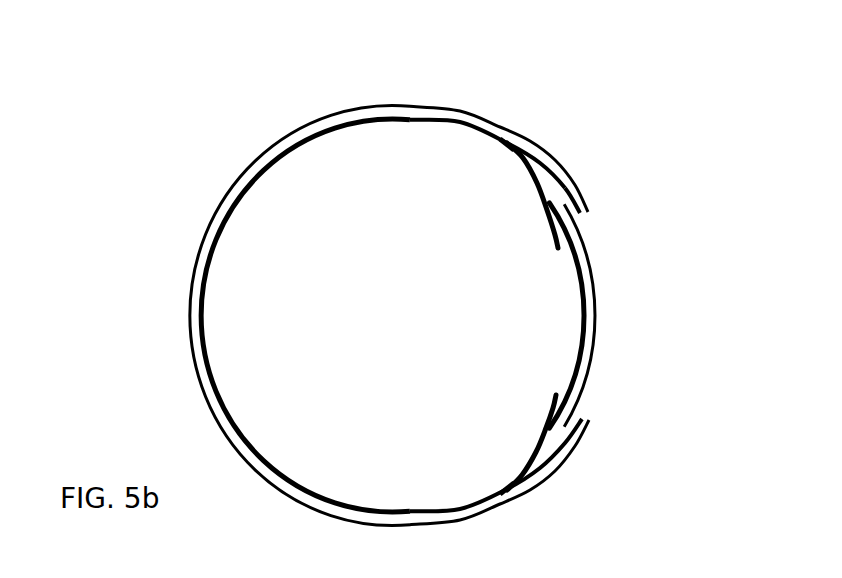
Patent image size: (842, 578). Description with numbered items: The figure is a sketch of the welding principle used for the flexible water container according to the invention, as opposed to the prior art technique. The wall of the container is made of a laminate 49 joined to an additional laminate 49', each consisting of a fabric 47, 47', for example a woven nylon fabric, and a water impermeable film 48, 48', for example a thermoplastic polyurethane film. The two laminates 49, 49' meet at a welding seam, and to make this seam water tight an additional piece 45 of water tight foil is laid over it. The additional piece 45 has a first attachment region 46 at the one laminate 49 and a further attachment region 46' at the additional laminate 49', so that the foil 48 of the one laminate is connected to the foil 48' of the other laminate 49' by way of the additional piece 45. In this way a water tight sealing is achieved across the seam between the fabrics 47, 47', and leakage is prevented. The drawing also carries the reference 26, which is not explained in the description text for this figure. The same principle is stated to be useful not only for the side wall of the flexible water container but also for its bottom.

The tube / drill string section 26 is at (281, 139).
The additional piece of water tight foil 45 is at (540, 188).
The first attachment region 46 is at (456, 316).
The further attachment region 46' is at (509, 315).
The fabric 47 is at (571, 136).
The fabric 47' is at (651, 185).
The water impermeable film 48 is at (570, 472).
The water impermeable film 48' is at (574, 440).
The laminate 49 is at (521, 148).
The additional laminate 49' is at (651, 315).